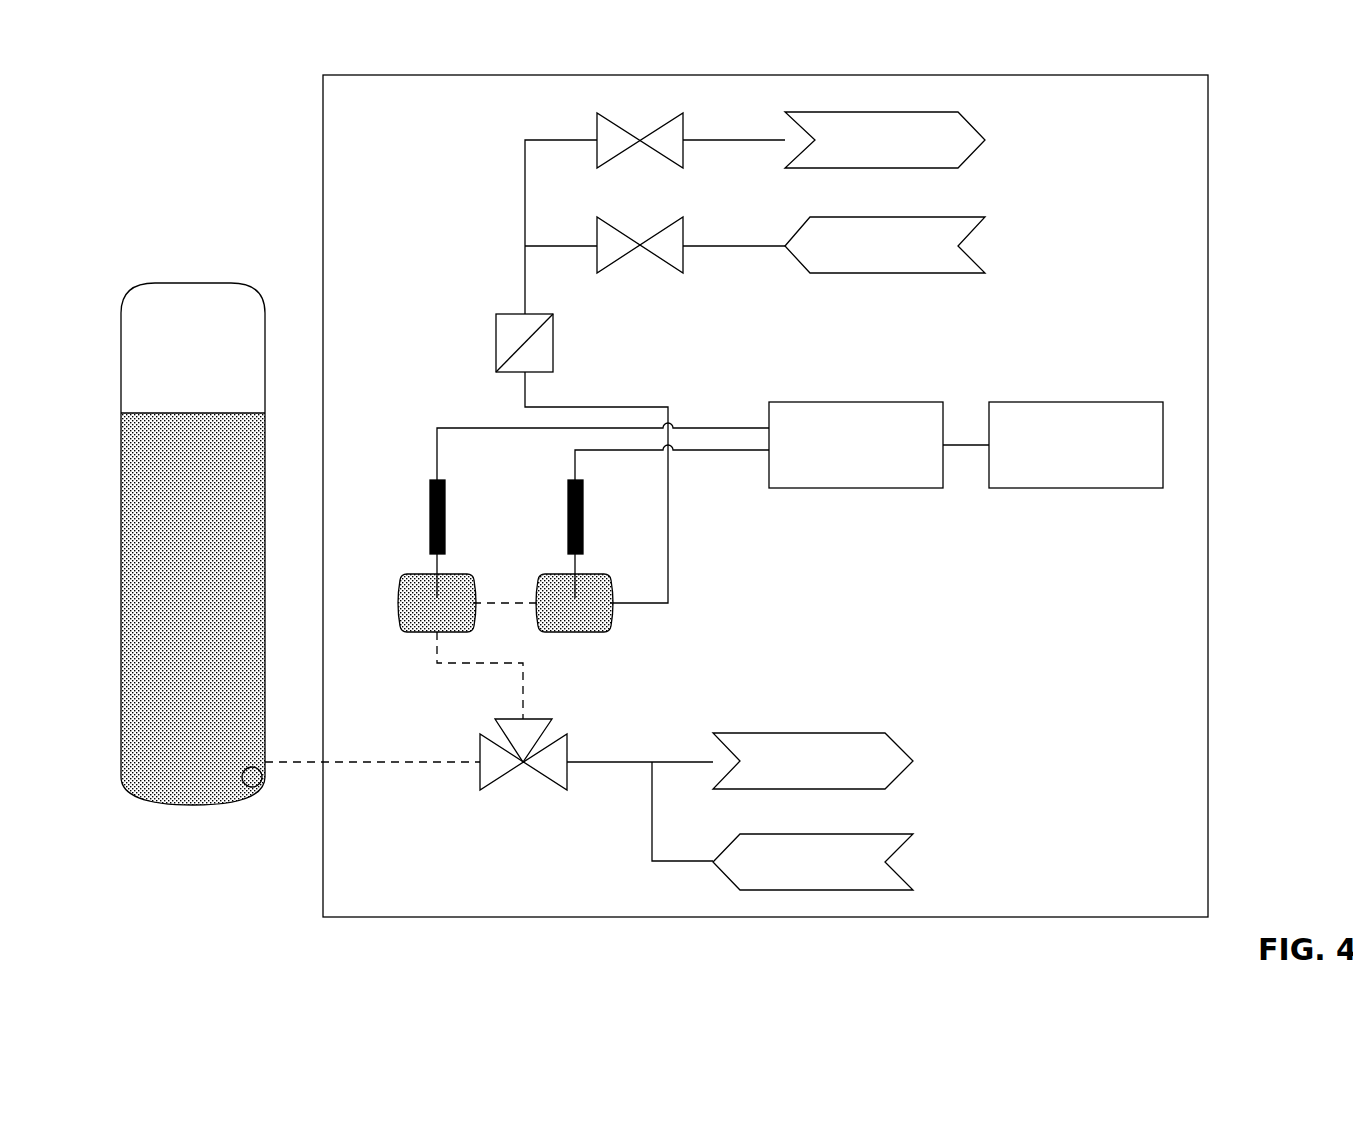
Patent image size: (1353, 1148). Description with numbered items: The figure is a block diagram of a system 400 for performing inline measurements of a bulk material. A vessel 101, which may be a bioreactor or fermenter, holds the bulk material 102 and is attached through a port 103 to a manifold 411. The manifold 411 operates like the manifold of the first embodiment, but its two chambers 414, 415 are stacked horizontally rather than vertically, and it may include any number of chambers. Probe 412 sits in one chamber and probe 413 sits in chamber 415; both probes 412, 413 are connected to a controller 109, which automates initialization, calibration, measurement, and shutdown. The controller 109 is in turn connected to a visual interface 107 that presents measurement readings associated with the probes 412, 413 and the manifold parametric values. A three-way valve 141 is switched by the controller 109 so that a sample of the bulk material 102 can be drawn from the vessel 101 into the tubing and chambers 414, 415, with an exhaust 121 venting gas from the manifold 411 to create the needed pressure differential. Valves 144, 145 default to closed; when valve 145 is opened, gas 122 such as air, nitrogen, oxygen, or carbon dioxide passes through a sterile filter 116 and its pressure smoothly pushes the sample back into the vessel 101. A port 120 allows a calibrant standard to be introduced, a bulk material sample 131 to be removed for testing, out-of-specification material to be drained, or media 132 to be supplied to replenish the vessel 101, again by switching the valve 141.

The system 400 is at (158, 82).
The manifold 411 is at (388, 75).
The vessel 101 is at (182, 283).
The bulk material 102 is at (190, 413).
The port 103 is at (250, 790).
The sterile filter 116 is at (515, 313).
The valve 144 is at (650, 155).
The valve 145 is at (661, 265).
The exhaust 121 is at (852, 110).
The gas 122 is at (852, 215).
The controller 109 is at (835, 400).
The visual interface 107 is at (1055, 400).
The probe 412 is at (428, 517).
The probe 413 is at (566, 517).
The chamber 414 is at (418, 573).
The chamber 415 is at (560, 573).
The three-way valve 141 is at (493, 738).
The port 120 is at (610, 760).
The bulk material sample 131 is at (780, 731).
The media 132 is at (780, 832).